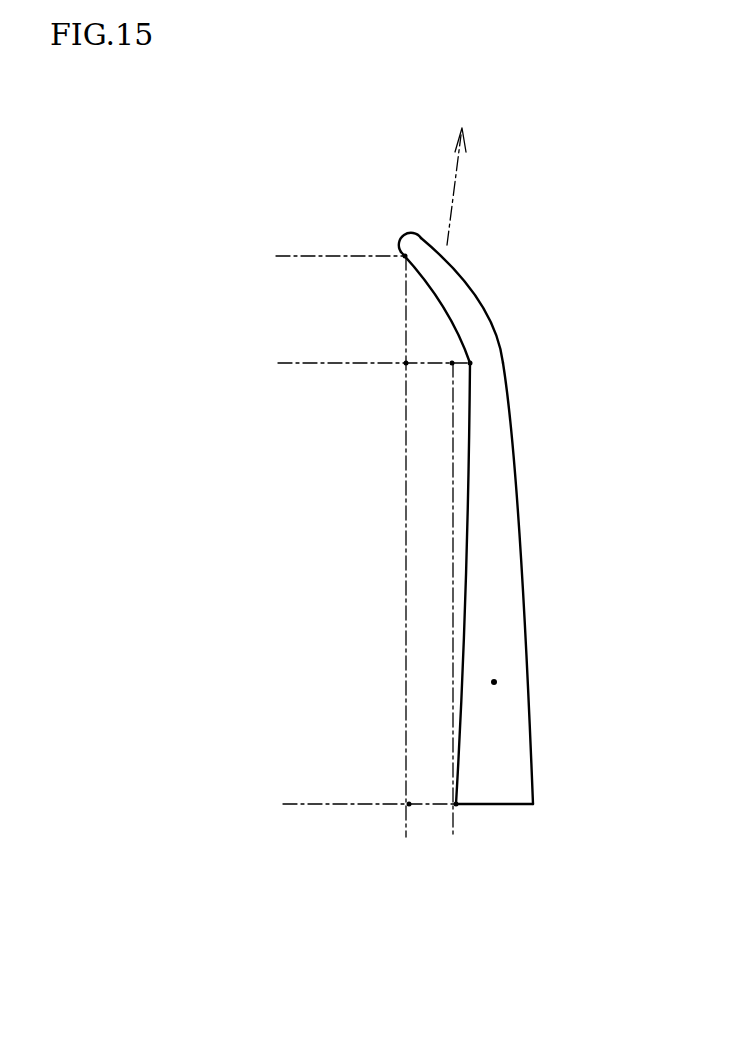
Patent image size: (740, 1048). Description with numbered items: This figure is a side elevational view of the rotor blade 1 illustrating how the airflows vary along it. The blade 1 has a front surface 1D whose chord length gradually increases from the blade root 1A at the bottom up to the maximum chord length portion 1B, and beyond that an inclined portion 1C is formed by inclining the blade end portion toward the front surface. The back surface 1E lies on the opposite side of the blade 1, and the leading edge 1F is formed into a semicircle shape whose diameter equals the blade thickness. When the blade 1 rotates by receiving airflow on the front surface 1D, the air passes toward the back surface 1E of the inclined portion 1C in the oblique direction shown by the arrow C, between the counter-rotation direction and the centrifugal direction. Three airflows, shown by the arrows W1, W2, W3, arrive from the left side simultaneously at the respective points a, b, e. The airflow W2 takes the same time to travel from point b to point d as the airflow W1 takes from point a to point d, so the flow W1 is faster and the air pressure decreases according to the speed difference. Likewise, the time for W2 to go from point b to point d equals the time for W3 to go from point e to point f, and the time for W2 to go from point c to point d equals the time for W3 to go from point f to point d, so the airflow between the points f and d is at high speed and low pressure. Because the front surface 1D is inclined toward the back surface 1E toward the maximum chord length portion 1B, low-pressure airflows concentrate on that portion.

The blade 1 is at (485, 522).
The blade root 1A is at (513, 804).
The maximum chord length portion 1B is at (462, 352).
The inclined portion 1C is at (463, 278).
The front surface 1D is at (467, 508).
The back surface 1E is at (520, 535).
The leading edge 1F is at (494, 682).
The airflow arrow W1 is at (262, 263).
The airflow arrow W2 is at (262, 369).
The airflow arrow W3 is at (267, 810).
The arrow C is at (459, 169).
The point a is at (405, 256).
The point b is at (406, 363).
The point c is at (452, 363).
The point d is at (470, 363).
The point e is at (409, 804).
The point f is at (456, 804).